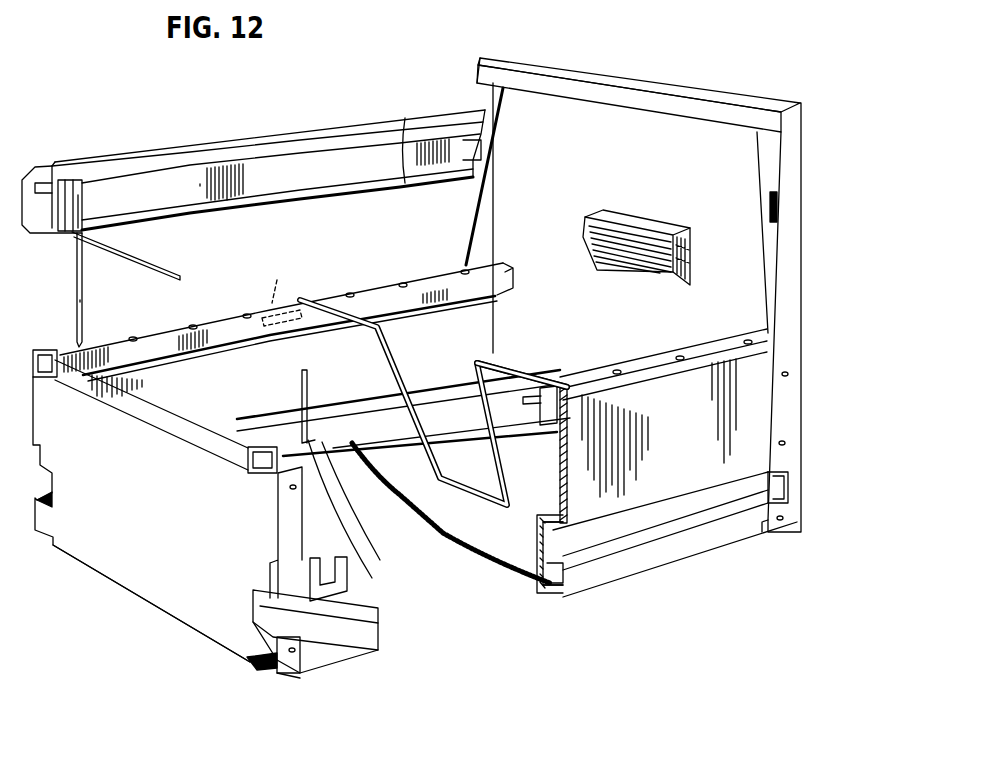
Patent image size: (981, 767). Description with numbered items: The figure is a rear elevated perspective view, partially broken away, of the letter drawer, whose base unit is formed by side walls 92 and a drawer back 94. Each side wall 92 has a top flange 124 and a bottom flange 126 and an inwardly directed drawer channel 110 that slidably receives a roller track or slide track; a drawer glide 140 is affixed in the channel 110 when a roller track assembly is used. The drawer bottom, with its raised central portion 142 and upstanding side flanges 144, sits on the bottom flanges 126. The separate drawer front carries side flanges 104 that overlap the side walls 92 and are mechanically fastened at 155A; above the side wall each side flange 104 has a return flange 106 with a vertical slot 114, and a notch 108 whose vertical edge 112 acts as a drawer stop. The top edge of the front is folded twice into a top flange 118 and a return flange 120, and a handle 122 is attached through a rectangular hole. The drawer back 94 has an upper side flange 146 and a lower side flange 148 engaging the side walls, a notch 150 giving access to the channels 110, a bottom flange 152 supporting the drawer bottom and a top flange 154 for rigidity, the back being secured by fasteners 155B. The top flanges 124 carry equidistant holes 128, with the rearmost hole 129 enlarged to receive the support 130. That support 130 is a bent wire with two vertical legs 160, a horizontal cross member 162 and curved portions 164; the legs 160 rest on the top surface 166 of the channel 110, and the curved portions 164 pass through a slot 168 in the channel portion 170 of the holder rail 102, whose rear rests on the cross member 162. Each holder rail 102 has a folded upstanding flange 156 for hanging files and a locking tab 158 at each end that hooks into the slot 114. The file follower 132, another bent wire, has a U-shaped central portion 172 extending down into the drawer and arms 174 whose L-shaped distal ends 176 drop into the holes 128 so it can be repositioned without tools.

The drawer side wall 92 is at (695, 449).
The drawer back 94 is at (160, 531).
The holder rail 102 is at (182, 157).
The side flange 104 is at (790, 348).
The return flange 106 is at (485, 93).
The notch 108 is at (762, 487).
The drawer channel 110 is at (543, 564).
The vertical edge of the notch 112 is at (748, 475).
The vertical slot 114 is at (780, 205).
The top flange 118 is at (667, 90).
The return flange 120 is at (580, 90).
The handle 122 is at (690, 227).
The top flange 124 is at (173, 323).
The bottom flange 126 is at (552, 592).
The holes 128 is at (403, 282).
The hole 129 is at (86, 338).
The support 130 is at (70, 268).
The file follower 132 is at (404, 416).
The drawer glide 140 is at (340, 590).
The raised central portion 142 is at (443, 507).
The side flanges 144 is at (548, 575).
The upper side flange 146 is at (315, 480).
The lower side flange 148 is at (277, 643).
The notch 150 is at (45, 477).
The bottom flange 152 is at (162, 618).
The top flange 154 is at (205, 432).
The mechanical fastening 155A is at (785, 377).
The fasteners 155B is at (292, 490).
The upstanding flange 156 is at (65, 193).
The locking tab 158 is at (23, 183).
The vertical legs 160 is at (75, 292).
The horizontal cross member 162 is at (76, 287).
The looped or curved portions 164 is at (70, 210).
The top surface 166 is at (437, 383).
The slot 168 is at (80, 217).
The channel portion 170 is at (310, 187).
The U-shaped central portion 172 is at (520, 532).
The arms 174 is at (530, 366).
The distal end 176 is at (617, 422).